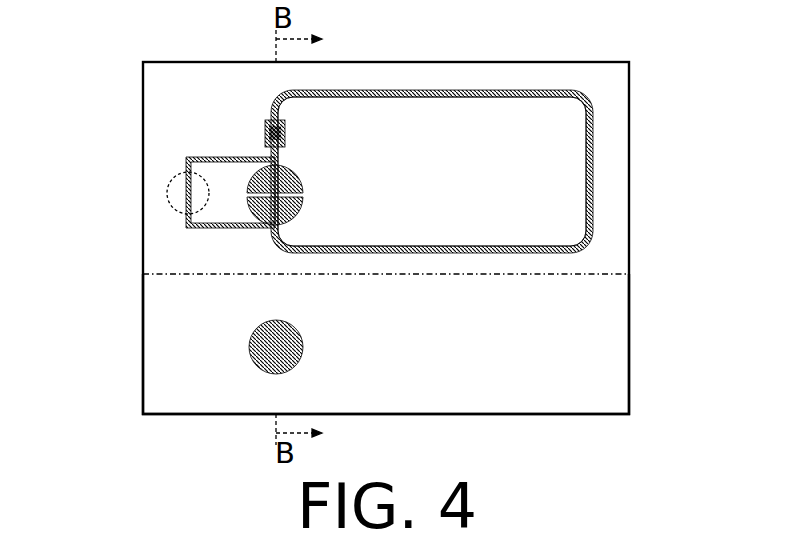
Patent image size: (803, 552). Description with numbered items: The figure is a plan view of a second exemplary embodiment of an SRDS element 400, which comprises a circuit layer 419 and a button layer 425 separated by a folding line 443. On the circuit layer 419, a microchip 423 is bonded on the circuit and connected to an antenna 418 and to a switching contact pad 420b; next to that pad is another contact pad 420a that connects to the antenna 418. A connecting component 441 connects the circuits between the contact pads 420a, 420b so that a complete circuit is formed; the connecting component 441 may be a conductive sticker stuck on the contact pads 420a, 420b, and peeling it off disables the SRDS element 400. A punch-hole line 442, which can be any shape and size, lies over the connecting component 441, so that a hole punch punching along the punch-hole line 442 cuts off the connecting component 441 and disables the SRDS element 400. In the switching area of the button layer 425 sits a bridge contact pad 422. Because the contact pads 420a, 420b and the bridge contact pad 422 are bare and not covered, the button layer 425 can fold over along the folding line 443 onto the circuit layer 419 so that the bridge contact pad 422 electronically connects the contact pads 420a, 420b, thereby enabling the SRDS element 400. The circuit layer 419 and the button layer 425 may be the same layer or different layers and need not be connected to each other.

The SRDS element 400 is at (123, 125).
The antenna 418 is at (486, 245).
The circuit layer 419 is at (613, 125).
The contact pad 420a is at (300, 213).
The switching contact pad 420b is at (298, 179).
The bridge contact pad 422 is at (300, 335).
The microchip 423 is at (285, 132).
The button layer 425 is at (602, 342).
The connecting component 441 is at (225, 155).
The punch-hole line 442 is at (165, 200).
The folding line 443 is at (495, 277).